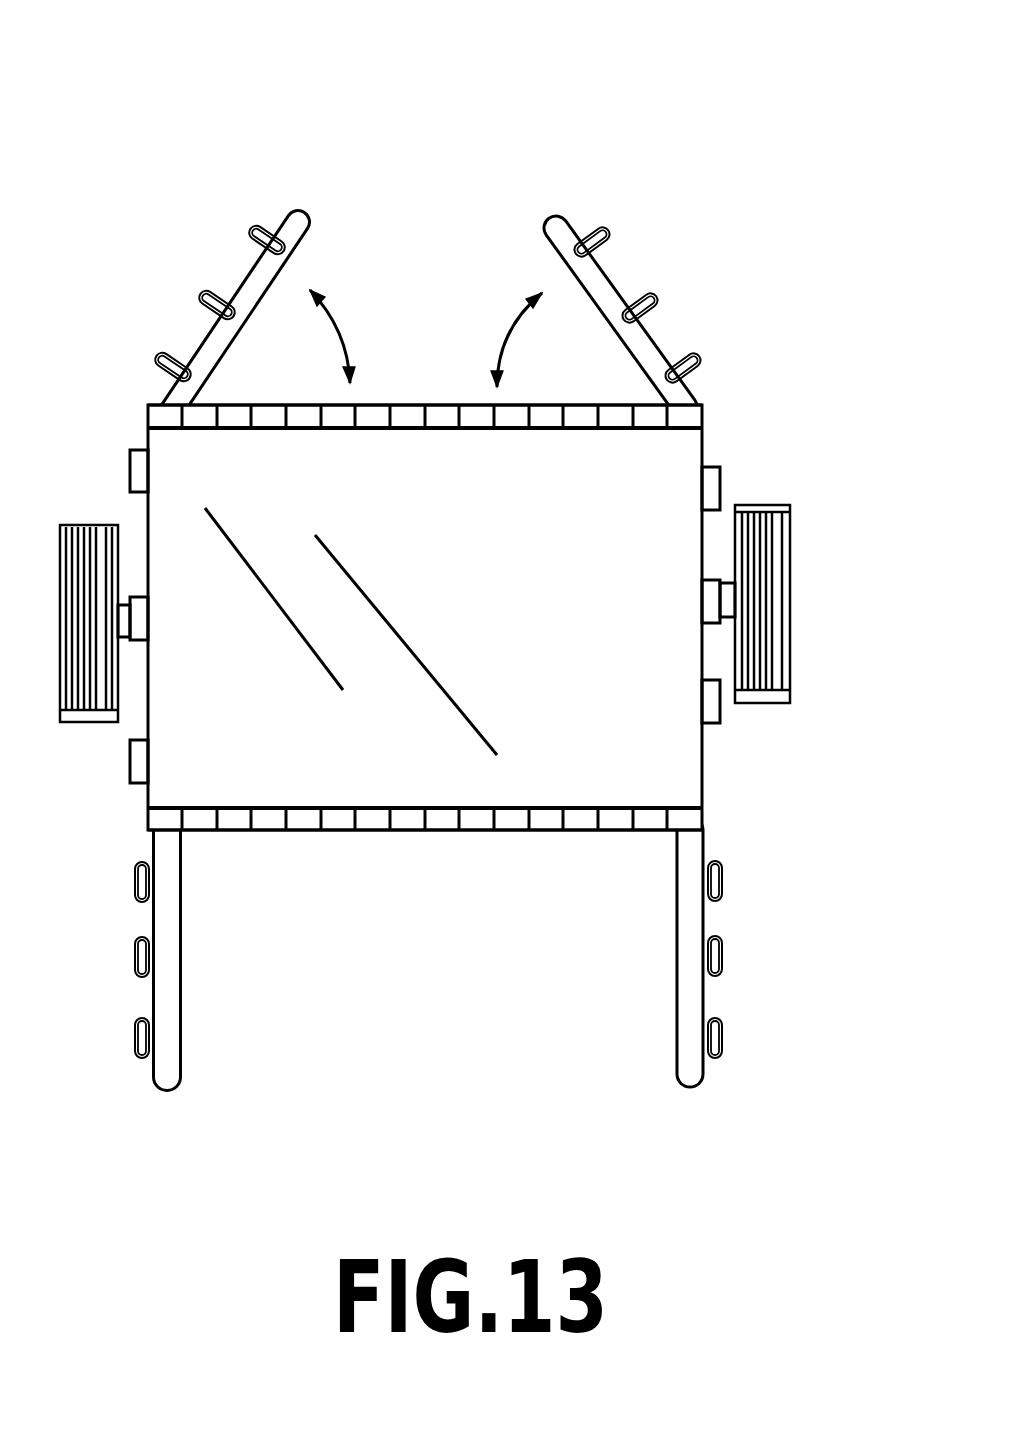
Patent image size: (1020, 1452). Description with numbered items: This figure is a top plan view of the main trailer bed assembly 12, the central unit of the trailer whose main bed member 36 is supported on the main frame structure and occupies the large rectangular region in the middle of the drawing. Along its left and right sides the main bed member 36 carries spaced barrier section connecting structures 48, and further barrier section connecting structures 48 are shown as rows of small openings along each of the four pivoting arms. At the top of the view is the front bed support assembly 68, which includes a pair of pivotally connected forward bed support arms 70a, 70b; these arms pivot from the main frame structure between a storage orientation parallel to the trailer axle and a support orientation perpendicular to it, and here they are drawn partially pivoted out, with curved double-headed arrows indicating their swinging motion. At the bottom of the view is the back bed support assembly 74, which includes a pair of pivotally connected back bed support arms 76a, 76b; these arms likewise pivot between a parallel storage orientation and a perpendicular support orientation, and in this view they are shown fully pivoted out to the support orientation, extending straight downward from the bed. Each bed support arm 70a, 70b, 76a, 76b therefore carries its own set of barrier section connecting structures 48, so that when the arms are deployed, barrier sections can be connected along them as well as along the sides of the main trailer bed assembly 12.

The main trailer bed assembly 12 is at (356, 760).
The main bed member 36 is at (626, 588).
The barrier section connecting structures 48 is at (212, 300).
The front bed support assembly 68 is at (502, 209).
The forward bed support arm 70a is at (293, 232).
The forward bed support arm 70b is at (556, 238).
The back bed support assembly 74 is at (482, 1054).
The back bed support arm 76a is at (170, 980).
The back bed support arm 76b is at (690, 1068).